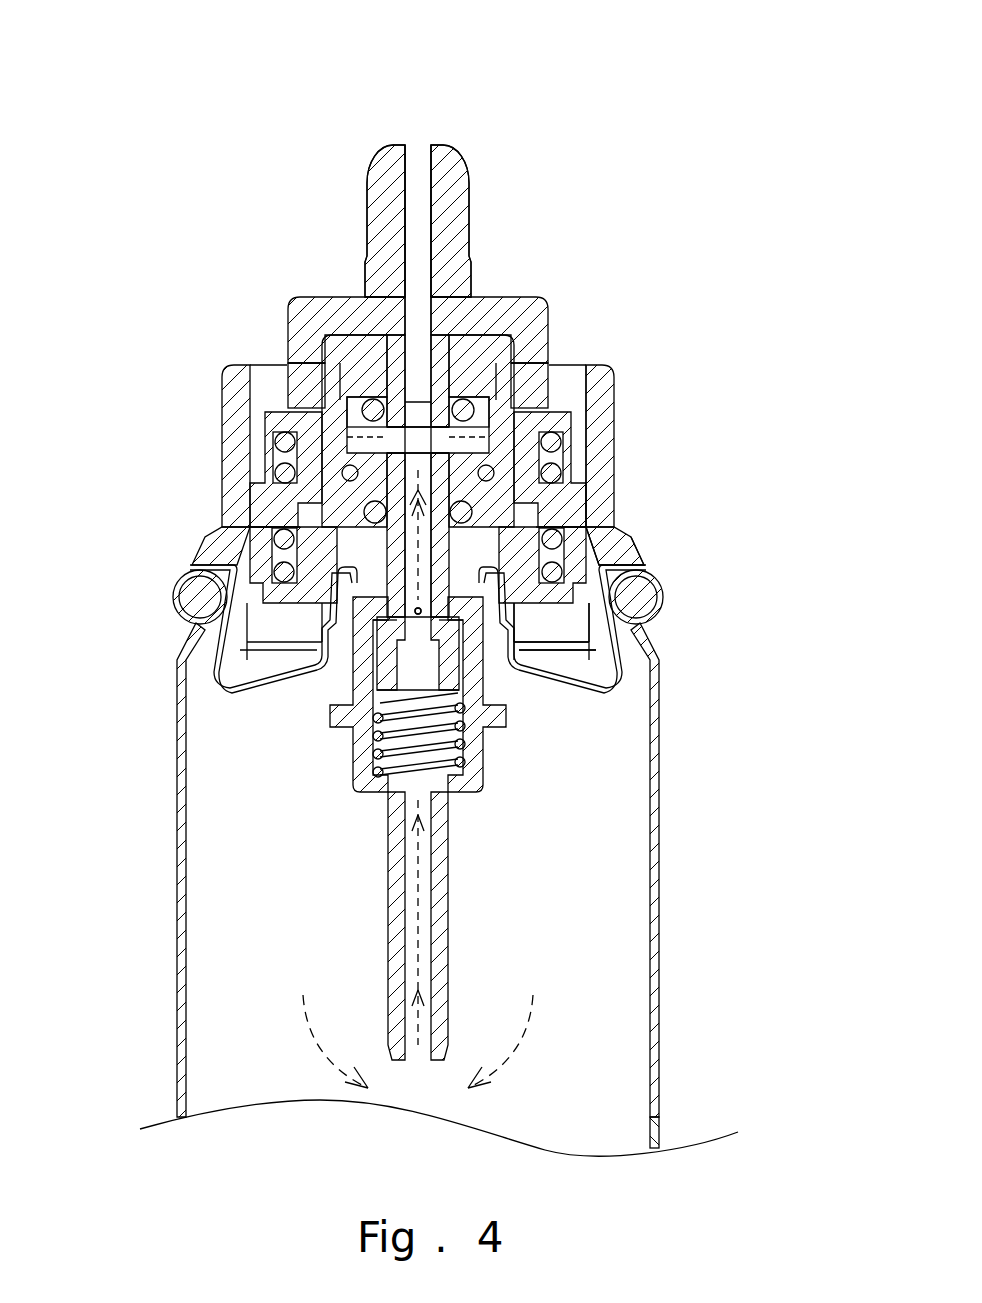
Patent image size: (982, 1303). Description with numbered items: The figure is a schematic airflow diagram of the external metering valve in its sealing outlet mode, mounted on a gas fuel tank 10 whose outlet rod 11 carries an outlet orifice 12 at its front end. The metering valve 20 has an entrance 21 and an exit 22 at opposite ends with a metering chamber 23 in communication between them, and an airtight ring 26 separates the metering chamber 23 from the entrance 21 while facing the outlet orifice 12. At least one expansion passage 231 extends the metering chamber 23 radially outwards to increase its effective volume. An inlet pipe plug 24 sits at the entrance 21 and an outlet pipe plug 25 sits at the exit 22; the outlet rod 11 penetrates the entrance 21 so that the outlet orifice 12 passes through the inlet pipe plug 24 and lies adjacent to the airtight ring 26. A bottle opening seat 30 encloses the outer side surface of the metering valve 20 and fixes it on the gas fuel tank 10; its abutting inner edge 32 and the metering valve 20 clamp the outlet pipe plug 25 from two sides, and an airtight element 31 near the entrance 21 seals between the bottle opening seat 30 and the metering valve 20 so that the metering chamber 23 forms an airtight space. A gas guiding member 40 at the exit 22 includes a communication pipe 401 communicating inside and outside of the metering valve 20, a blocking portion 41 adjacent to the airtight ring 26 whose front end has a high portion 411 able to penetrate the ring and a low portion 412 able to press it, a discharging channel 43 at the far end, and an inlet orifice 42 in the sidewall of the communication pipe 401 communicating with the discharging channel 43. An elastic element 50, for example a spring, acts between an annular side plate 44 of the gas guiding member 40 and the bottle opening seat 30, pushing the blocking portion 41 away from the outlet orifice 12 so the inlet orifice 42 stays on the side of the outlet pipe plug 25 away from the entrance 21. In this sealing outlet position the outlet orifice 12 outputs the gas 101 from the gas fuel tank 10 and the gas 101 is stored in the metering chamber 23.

The gas fuel tank 10 is at (652, 827).
The gas 101 is at (419, 1062).
The outlet rod 11 is at (500, 545).
The outlet orifice 12 is at (590, 378).
The metering valve 20 is at (350, 530).
The entrance 21 is at (500, 512).
The exit 22 is at (530, 425).
The metering chamber 23 is at (360, 447).
The expansion passage 231 is at (388, 436).
The inlet pipe plug 24 is at (193, 571).
The outlet pipe plug 25 is at (372, 388).
The airtight ring 26 is at (513, 372).
The bottle opening seat 30 is at (605, 396).
The airtight element 31 is at (490, 500).
The abutting inner edge 32 is at (343, 378).
The gas guiding member 40 is at (448, 134).
The communication pipe 401 is at (452, 195).
The blocking portion 41 is at (527, 322).
The high portion 411 is at (380, 600).
The low portion 412 is at (355, 472).
The inlet orifice 42 is at (426, 395).
The discharging channel 43 is at (418, 183).
The annular side plate 44 is at (535, 340).
The elastic element 50 is at (470, 455).